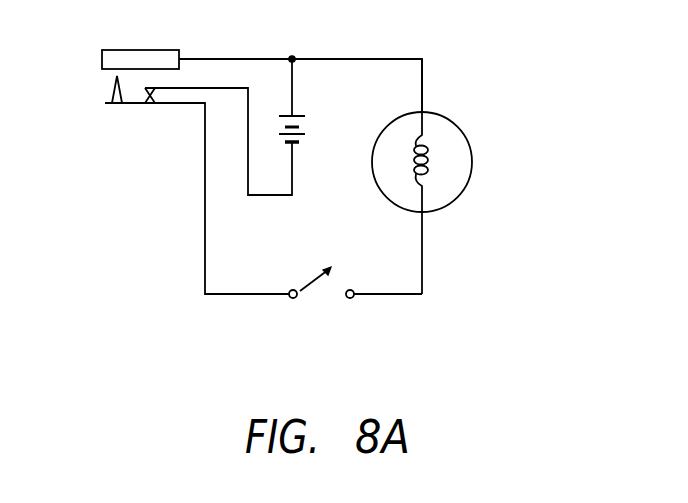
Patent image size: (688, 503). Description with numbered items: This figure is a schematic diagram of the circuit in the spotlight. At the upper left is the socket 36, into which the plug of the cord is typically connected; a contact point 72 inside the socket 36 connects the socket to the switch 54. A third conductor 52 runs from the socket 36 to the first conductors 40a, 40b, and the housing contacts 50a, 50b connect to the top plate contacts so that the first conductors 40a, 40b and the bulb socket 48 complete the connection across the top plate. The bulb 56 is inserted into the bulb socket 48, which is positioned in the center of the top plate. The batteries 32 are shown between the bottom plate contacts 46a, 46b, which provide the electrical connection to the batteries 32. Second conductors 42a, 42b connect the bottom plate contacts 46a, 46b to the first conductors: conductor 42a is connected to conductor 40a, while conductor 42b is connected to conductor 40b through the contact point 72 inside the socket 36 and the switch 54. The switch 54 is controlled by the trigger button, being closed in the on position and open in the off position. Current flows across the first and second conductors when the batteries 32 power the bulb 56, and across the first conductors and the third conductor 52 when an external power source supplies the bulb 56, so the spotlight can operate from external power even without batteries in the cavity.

The socket 36 is at (131, 50).
The third conductor 52 is at (222, 58).
The second conductor 42a is at (295, 79).
The housing contact 50a is at (388, 58).
The first conductor 40a is at (422, 85).
The bulb socket 48 is at (470, 180).
The bulb 56 is at (428, 172).
The first conductor 40b is at (423, 253).
The housing contact 50b is at (377, 296).
The switch 54 is at (323, 302).
The second conductor 42b is at (243, 145).
The bottom plate contact 46a is at (305, 113).
The batteries 32 is at (304, 139).
The bottom plate contact 46b is at (296, 158).
The contact point 72 is at (144, 100).